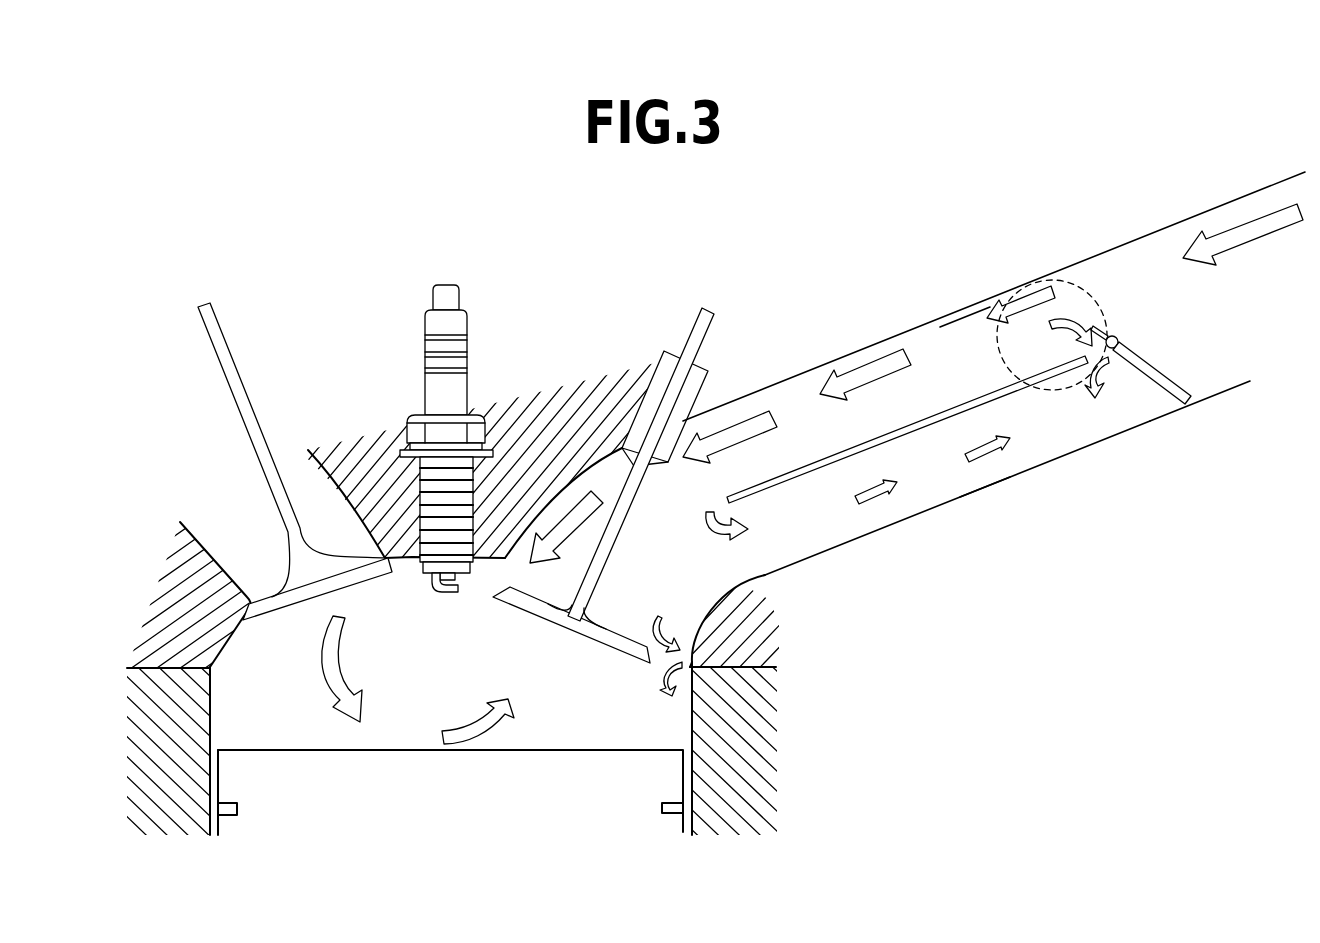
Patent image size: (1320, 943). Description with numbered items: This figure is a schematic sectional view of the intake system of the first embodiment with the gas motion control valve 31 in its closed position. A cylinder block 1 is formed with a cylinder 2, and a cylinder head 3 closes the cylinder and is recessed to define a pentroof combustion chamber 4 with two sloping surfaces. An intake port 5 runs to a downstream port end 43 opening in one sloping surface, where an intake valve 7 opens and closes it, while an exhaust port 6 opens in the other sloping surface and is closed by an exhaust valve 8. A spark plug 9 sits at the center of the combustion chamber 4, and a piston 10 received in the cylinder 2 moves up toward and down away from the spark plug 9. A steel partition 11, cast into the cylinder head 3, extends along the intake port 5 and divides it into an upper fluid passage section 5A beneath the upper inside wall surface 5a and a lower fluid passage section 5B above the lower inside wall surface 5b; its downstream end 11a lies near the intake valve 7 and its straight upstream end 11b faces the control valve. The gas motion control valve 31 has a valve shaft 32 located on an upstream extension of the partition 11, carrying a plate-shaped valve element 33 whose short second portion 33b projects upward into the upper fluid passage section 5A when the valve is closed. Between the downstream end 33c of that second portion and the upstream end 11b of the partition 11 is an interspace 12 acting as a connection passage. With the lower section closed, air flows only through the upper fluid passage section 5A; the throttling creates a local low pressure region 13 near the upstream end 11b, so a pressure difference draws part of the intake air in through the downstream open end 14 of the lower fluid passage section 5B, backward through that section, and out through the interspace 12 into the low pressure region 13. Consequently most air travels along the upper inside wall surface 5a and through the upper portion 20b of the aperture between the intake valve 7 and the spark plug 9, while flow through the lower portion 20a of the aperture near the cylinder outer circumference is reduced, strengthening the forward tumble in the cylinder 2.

The cylinder block 1 is at (168, 766).
The cylinder 2 is at (216, 692).
The cylinder head 3 is at (183, 602).
The combustion chamber 4 is at (385, 663).
The intake port 5 is at (915, 340).
The upper fluid passage section 5A is at (800, 413).
The lower fluid passage section 5B is at (885, 510).
The upper inside wall surface 5a is at (963, 317).
The lower inside wall surface 5b is at (985, 483).
The exhaust port 6 is at (318, 490).
The intake valve 7 is at (580, 628).
The exhaust valve 8 is at (255, 437).
The spark plug 9 is at (445, 590).
The piston 10 is at (665, 777).
The partition 11 is at (913, 434).
The downstream end of partition 11a is at (727, 505).
The upstream end of partition 11b is at (1068, 390).
The interspace 12 is at (1150, 397).
The local low pressure region 13 is at (1000, 348).
The downstream open end 14 is at (738, 548).
The lower portion of the open aperture 20a is at (687, 655).
The upper portion of the aperture 20b is at (503, 563).
The gas motion control valve 31 is at (1151, 300).
The valve shaft 32 is at (1122, 337).
The valve element 33 is at (1180, 388).
The second portion 33b is at (1097, 327).
The downstream end of second portion 33c is at (1088, 325).
The downstream port end 43 is at (652, 593).